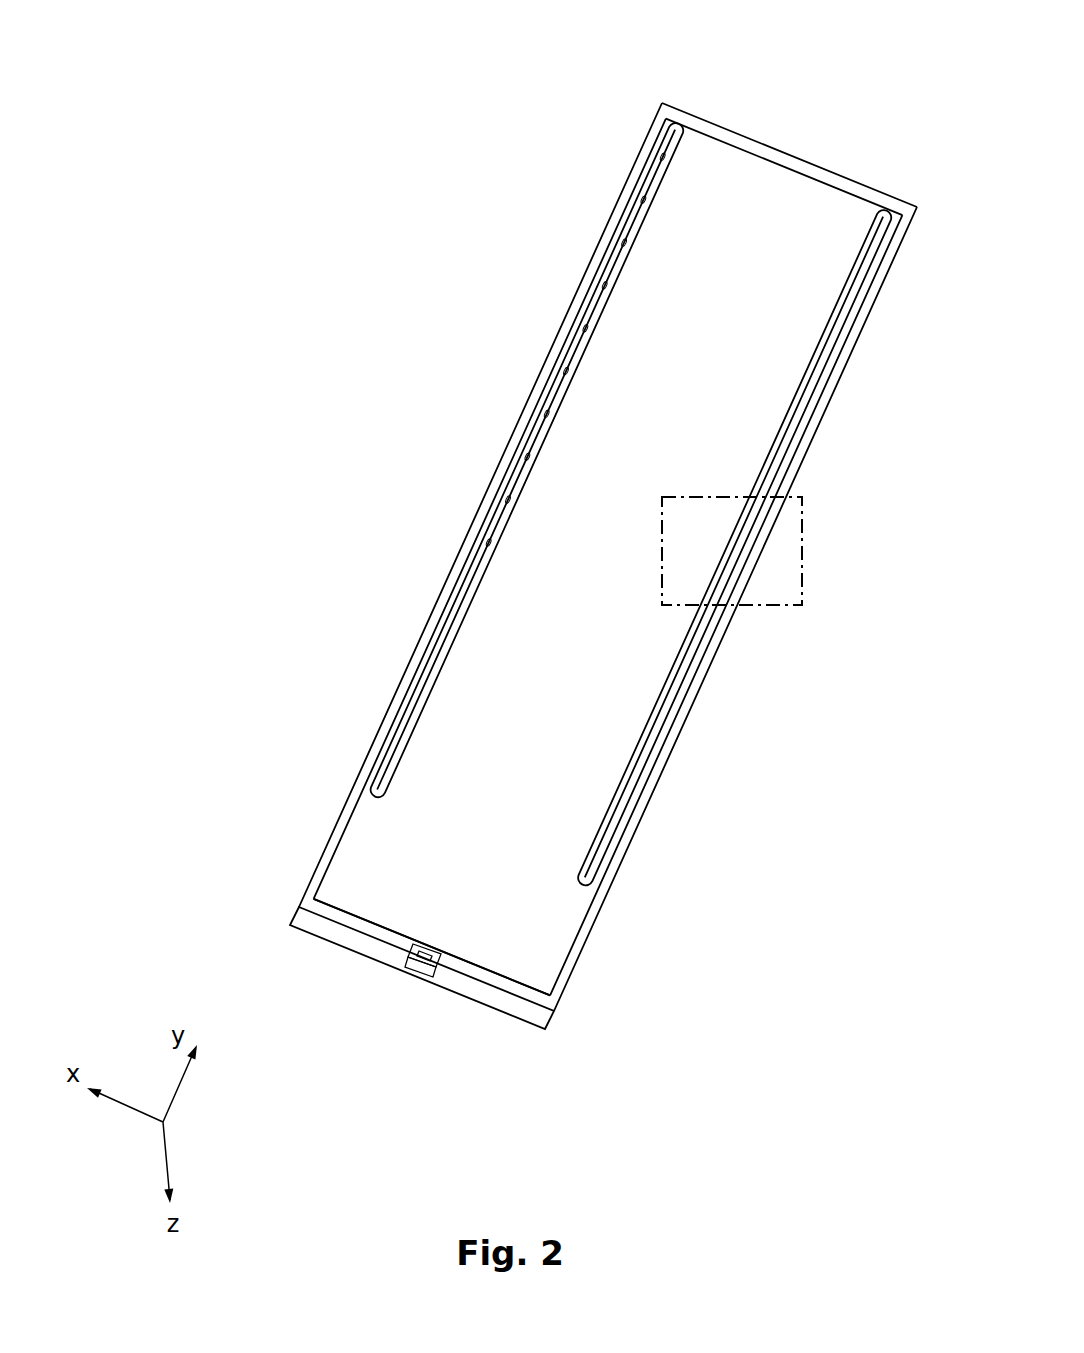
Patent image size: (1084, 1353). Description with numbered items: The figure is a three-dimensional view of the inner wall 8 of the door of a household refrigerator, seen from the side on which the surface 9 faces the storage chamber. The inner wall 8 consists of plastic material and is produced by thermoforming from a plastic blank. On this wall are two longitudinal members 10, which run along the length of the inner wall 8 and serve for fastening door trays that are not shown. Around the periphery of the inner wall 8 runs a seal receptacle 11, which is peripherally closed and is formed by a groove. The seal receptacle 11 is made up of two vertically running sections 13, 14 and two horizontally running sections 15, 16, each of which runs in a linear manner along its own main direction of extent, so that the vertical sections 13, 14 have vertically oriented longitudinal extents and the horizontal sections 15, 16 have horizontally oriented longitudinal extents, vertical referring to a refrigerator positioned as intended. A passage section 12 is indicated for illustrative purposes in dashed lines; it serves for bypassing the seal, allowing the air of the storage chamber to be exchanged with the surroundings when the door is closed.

The inner wall 8 is at (449, 152).
The surface 9 is at (505, 893).
The longitudinal members 10 is at (674, 124).
The seal receptacle 11 is at (288, 910).
The passage section 12 is at (766, 567).
The vertically running section 13 is at (657, 775).
The vertically running section 14 is at (333, 847).
The horizontally running section 15 is at (488, 990).
The horizontally running section 16 is at (744, 143).